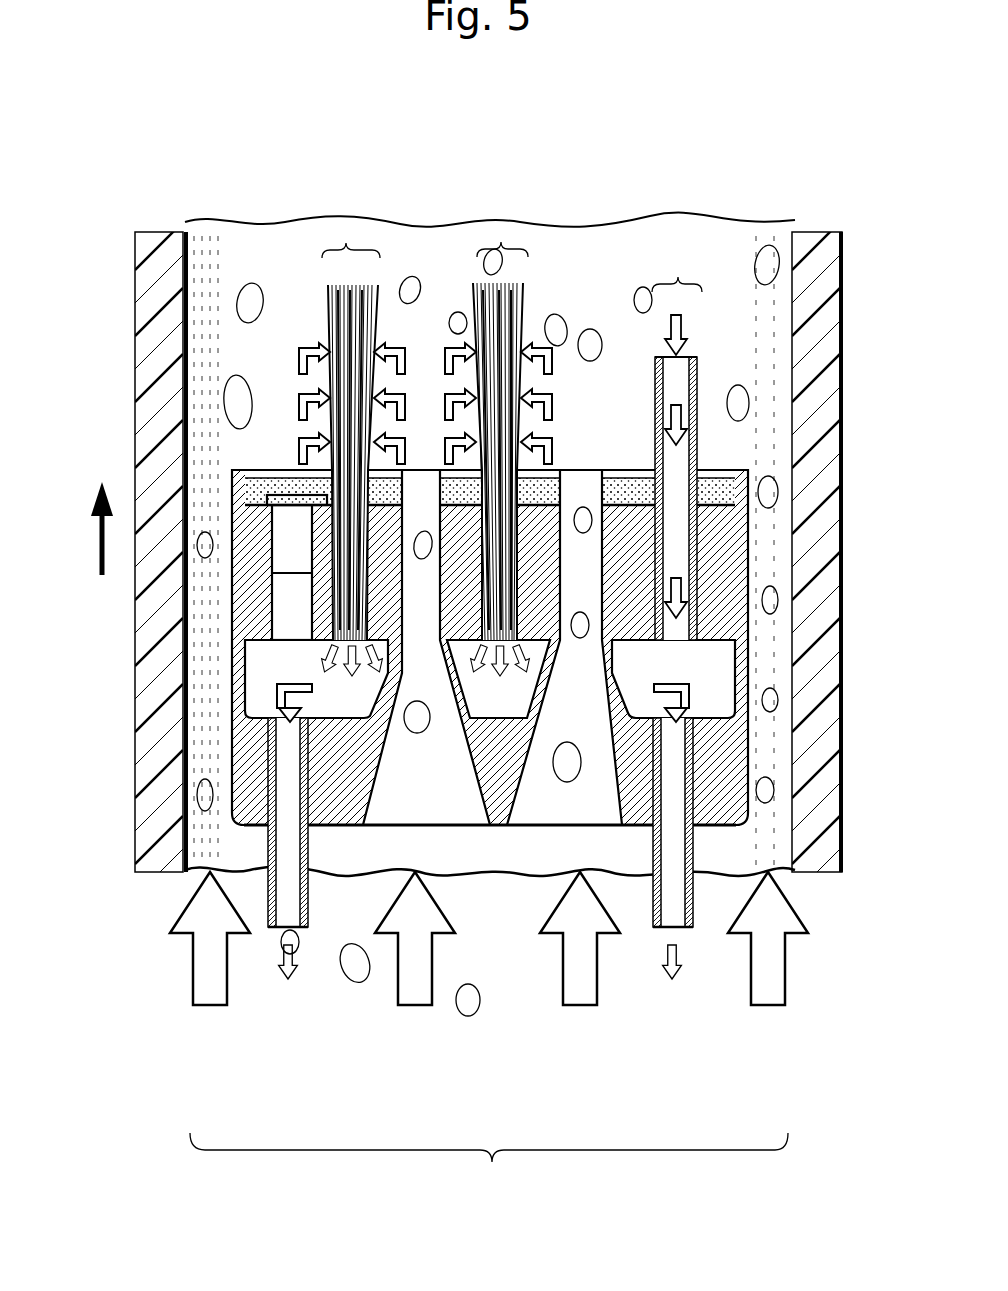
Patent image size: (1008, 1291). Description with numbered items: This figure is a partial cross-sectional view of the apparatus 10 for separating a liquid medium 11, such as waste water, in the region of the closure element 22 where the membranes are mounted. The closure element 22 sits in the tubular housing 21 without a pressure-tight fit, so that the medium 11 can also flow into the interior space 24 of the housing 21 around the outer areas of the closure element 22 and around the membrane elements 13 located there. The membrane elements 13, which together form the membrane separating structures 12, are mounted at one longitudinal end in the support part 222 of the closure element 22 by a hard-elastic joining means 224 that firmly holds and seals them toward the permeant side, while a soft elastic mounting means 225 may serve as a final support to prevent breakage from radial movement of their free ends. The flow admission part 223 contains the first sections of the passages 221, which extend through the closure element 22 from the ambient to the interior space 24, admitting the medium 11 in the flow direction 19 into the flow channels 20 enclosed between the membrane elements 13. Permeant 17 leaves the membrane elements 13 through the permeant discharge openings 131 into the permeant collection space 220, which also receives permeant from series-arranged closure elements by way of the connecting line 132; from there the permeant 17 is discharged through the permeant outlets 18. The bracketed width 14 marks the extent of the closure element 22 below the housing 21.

The apparatus 10 is at (810, 145).
The liquid medium 11 is at (200, 1006).
The membrane separating structure 12 is at (346, 243).
The membrane element 13 is at (376, 292).
The permeant discharge opening 131 is at (330, 652).
The connecting line 132 is at (697, 455).
The nozzle block width 14 is at (489, 1169).
The permeant 17 is at (692, 568).
The permeant outlet 18 is at (598, 788).
The flow direction 19 is at (100, 530).
The flow channel 20 is at (255, 337).
The housing 21 is at (815, 272).
The closure element 22 is at (253, 747).
The permeant collection space 220 is at (498, 700).
The passage 221 is at (290, 838).
The support part 222 is at (690, 588).
The flow admission part 223 is at (727, 757).
The hard-elastic joining means 224 is at (717, 533).
The soft elastic mounting means 225 is at (718, 487).
The interior space 24 is at (222, 357).